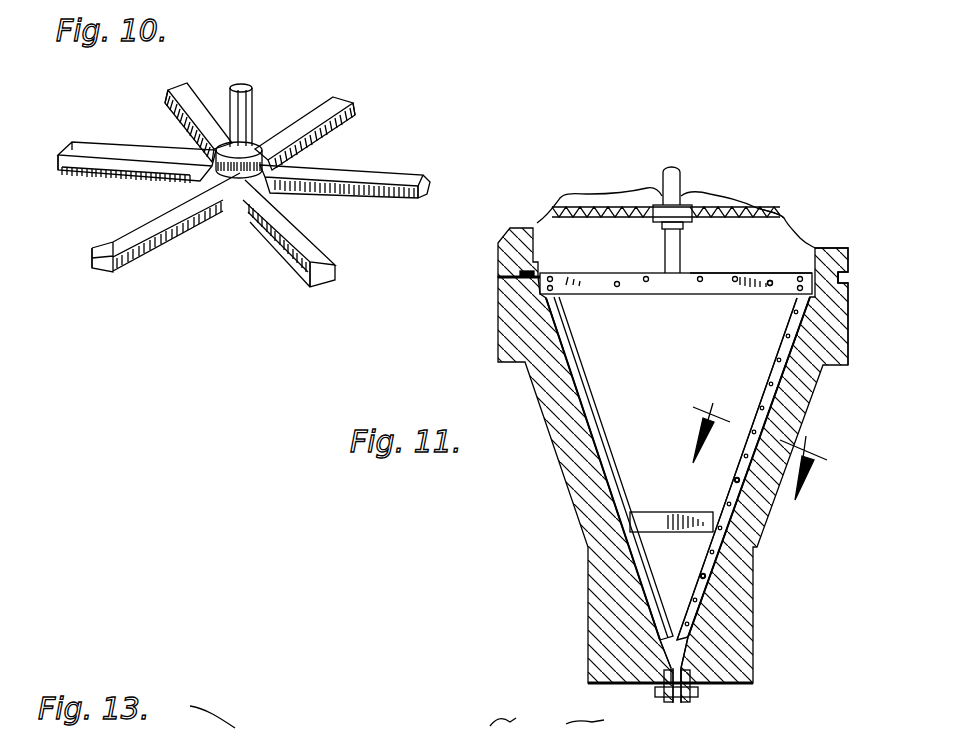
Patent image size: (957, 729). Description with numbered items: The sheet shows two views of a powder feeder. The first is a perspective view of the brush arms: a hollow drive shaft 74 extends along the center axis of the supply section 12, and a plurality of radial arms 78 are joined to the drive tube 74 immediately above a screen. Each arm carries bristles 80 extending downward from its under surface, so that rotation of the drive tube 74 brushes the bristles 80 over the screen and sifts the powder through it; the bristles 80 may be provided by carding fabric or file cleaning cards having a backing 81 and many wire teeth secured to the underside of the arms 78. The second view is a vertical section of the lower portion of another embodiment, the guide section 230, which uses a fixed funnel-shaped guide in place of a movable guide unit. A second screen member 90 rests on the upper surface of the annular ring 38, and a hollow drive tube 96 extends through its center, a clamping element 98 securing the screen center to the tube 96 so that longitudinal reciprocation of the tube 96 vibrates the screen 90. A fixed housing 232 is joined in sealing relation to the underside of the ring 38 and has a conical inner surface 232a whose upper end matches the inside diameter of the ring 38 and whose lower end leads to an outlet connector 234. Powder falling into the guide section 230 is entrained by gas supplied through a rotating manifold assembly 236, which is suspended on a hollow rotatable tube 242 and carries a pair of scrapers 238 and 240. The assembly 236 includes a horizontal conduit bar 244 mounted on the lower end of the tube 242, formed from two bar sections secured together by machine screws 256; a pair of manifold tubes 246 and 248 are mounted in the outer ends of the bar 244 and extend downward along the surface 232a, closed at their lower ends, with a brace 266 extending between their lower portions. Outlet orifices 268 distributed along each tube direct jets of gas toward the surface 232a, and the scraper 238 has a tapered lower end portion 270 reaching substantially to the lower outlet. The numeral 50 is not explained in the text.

In FIG. 10, the hollow drive shaft 74 is at (256, 77).
In FIG. 10, the radial arms 78 is at (185, 100).
In FIG. 10, the bristles 80 is at (177, 121).
In FIG. 10, the backing 81 is at (170, 95).
In FIG. 11, the hollow drive tube 96 is at (664, 178).
In FIG. 11, the clamping element 98 is at (656, 205).
In FIG. 11, the second screen member 90 is at (750, 180).
In FIG. 11, the rotating manifold assembly 236 is at (772, 246).
In FIG. 11, the annular ring 38 is at (823, 248).
In FIG. 11, the seal 50 is at (846, 280).
In FIG. 11, the horizontal conduit bar 244 is at (615, 258).
In FIG. 11, the hollow rotatable tube 242 is at (686, 250).
In FIG. 11, the machine screws 256 is at (782, 296).
In FIG. 11, the conical inner surface 232a is at (556, 356).
In FIG. 11, the manifold tube 248 is at (583, 402).
In FIG. 11, the manifold tube 246 is at (775, 368).
In FIG. 11, the supply section 12 is at (766, 438).
In FIG. 11, the guide section 230 is at (648, 455).
In FIG. 11, the scraper 240 is at (582, 404).
In FIG. 11, the scraper 238 is at (807, 378).
In FIG. 11, the brace 266 is at (642, 512).
In FIG. 11, the outlet orifices 268 is at (738, 469).
In FIG. 11, the fixed housing 232 is at (768, 502).
In FIG. 11, the lower end portion 270 is at (688, 648).
In FIG. 11, the outlet connector 234 is at (684, 700).